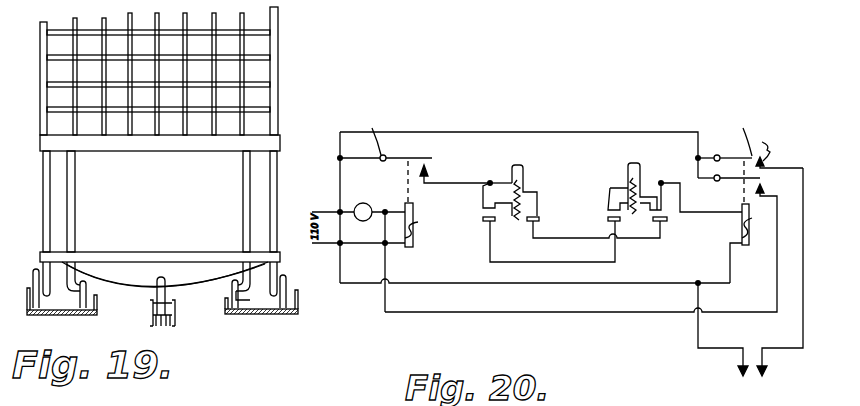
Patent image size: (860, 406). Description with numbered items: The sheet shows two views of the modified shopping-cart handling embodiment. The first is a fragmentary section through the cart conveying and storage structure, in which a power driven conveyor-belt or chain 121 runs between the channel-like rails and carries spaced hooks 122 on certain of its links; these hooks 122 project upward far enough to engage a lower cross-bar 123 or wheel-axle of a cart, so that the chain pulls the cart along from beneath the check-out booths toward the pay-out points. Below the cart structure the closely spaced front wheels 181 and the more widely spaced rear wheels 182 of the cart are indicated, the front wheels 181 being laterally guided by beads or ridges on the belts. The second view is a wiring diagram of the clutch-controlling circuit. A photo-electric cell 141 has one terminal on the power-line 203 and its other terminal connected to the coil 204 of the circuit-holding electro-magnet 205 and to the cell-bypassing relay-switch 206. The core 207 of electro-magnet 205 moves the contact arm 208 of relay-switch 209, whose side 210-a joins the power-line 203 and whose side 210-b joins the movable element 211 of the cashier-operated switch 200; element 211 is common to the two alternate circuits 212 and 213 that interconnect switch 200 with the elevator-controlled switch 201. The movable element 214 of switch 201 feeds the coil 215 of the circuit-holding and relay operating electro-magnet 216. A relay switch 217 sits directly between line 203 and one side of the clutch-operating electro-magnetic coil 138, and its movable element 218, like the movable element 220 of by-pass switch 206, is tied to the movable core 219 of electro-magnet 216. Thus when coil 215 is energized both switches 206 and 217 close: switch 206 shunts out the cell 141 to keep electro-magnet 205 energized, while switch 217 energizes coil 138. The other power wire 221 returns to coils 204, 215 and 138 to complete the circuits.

In FIG. 19, the conveyor-belt or chain 121 is at (174, 322).
In FIG. 19, the hooks 122 is at (166, 296).
In FIG. 19, the lower cross-bar 123 is at (133, 290).
In FIG. 19, the front wheels 181 is at (251, 316).
In FIG. 19, the rear wheels 182 is at (283, 316).
In FIG. 20, the photo-electric cell 141 is at (373, 194).
In FIG. 20, the cashier-operated switch 200 is at (512, 168).
In FIG. 20, the elevator-controlled switch 201 is at (637, 162).
In FIG. 20, the power-line 203 is at (313, 210).
In FIG. 20, the coil 204 is at (414, 212).
In FIG. 20, the circuit-holding electro-magnet 205 is at (416, 226).
In FIG. 20, the cell-bypassing relay-switch 206 is at (764, 183).
In FIG. 20, the core 207 is at (411, 247).
In FIG. 20, the movable contact arm 208 is at (414, 147).
In FIG. 20, the relay-switch 209 is at (429, 162).
In FIG. 20, the side of relay-switch 210-a is at (375, 133).
In FIG. 20, the side of relay-switch 210-b is at (455, 175).
In FIG. 20, the movable element 211 is at (527, 193).
In FIG. 20, the alternate circuit 212 is at (586, 234).
In FIG. 20, the alternate circuit 213 is at (563, 258).
In FIG. 20, the movable element 214 is at (643, 196).
In FIG. 20, the coil 215 is at (742, 226).
In FIG. 20, the circuit-holding and relay operating electro-magnet 216 is at (762, 231).
In FIG. 20, the relay switch 217 is at (781, 153).
In FIG. 20, the movable switch element 218 is at (728, 137).
In FIG. 20, the movable core 219 is at (746, 246).
In FIG. 20, the movable element 220 is at (737, 180).
In FIG. 20, the power-supply wire 221 is at (321, 247).
In FIG. 20, the clutch-operating electro-magnetic coil 138 is at (740, 386).